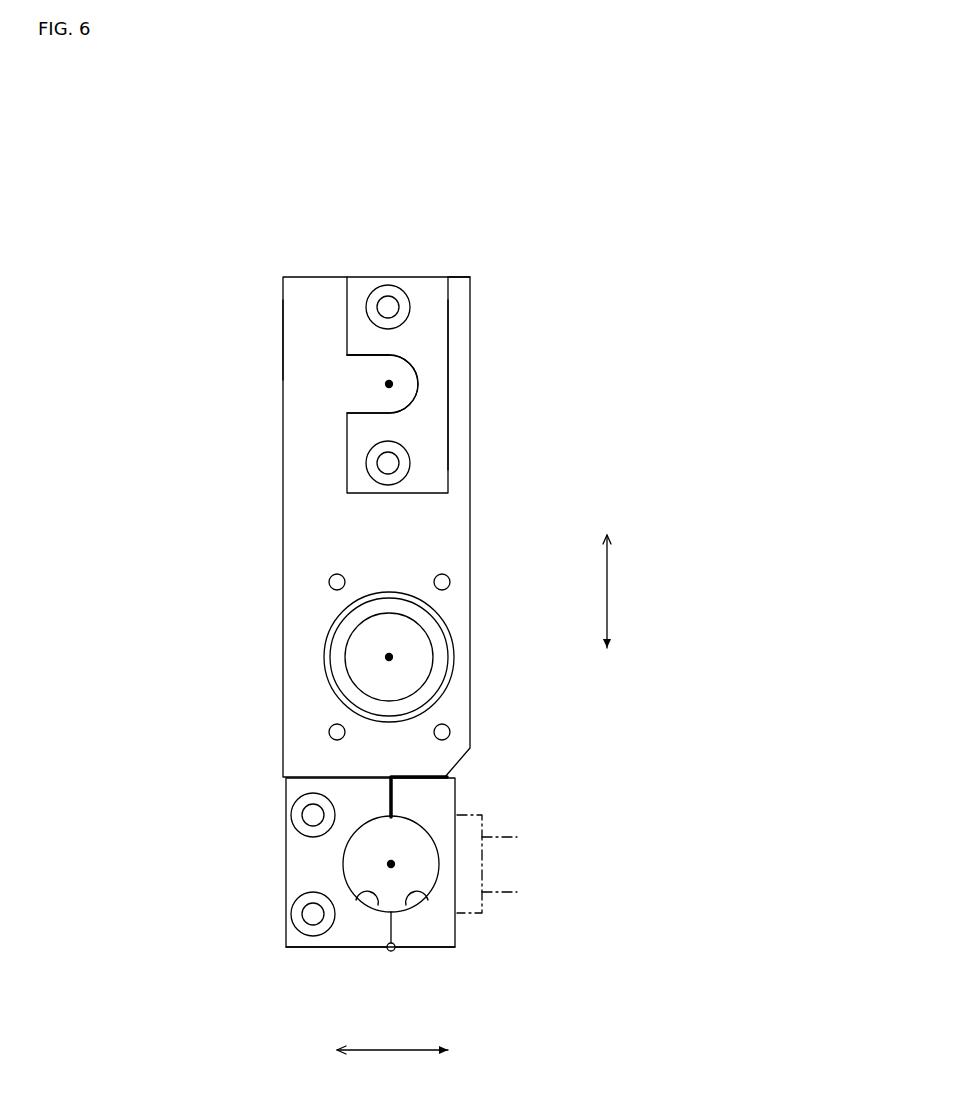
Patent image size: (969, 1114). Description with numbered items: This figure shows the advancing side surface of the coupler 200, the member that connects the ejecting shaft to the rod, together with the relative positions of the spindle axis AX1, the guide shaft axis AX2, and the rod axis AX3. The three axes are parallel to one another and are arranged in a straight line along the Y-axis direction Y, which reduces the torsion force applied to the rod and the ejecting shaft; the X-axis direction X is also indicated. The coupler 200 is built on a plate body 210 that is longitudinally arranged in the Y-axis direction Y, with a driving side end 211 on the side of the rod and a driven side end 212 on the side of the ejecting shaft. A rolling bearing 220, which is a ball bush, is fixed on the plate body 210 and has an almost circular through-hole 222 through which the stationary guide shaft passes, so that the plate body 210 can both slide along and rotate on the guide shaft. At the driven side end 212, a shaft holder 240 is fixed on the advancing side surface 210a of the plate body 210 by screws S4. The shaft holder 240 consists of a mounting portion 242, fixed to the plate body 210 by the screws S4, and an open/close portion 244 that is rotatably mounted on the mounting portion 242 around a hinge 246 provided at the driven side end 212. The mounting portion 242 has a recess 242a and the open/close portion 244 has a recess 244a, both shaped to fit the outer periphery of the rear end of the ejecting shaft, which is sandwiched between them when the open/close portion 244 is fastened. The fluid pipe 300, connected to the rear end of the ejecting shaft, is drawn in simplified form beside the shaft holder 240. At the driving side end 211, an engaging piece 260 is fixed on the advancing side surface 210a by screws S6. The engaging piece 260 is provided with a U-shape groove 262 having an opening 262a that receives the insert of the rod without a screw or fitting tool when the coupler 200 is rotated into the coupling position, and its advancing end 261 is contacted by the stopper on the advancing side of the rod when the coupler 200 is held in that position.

The coupler 200 is at (307, 223).
The plate body 210 is at (280, 527).
The advancing side surface 210a is at (297, 338).
The driving side end 211 is at (457, 277).
The driven side end 212 is at (305, 949).
The rolling bearing 220 is at (452, 625).
The through-hole 222 is at (425, 662).
The shaft holder 240 is at (283, 792).
The mounting portion 242 is at (290, 815).
The recess 242a is at (379, 904).
The open/close portion 244 is at (457, 795).
The recess 244a is at (413, 904).
The hinge 246 is at (394, 952).
The engaging piece 260 is at (452, 288).
The advancing end 261 is at (428, 338).
The U-shape groove 262 is at (408, 362).
The opening 262a is at (352, 363).
The fluid pipe 300 is at (496, 906).
The spindle axis AX1 is at (386, 864).
The guide shaft axis AX2 is at (385, 657).
The rod axis AX3 is at (385, 386).
The screws S4 is at (294, 827).
The screws S6 is at (370, 291).
The X-axis direction X is at (392, 1068).
The Y-axis direction Y is at (614, 591).